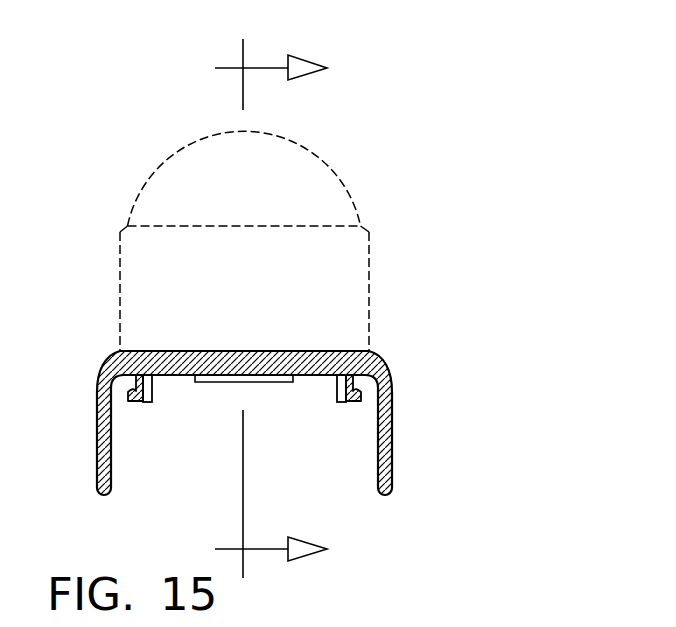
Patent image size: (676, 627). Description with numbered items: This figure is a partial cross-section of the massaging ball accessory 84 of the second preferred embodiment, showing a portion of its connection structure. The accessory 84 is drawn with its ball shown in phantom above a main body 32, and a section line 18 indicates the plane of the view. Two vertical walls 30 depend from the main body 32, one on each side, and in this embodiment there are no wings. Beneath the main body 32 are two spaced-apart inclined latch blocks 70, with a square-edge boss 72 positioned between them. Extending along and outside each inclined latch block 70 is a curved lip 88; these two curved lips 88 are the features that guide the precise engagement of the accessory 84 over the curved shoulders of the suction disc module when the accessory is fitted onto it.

The section line 18 is at (282, 310).
The vertical walls 30 is at (392, 433).
The main body 32 is at (317, 351).
The inclined latch blocks 70 is at (152, 401).
The square-edge boss 72 is at (265, 383).
The massaging ball accessory 84 is at (456, 197).
The curved lips 88 is at (128, 402).